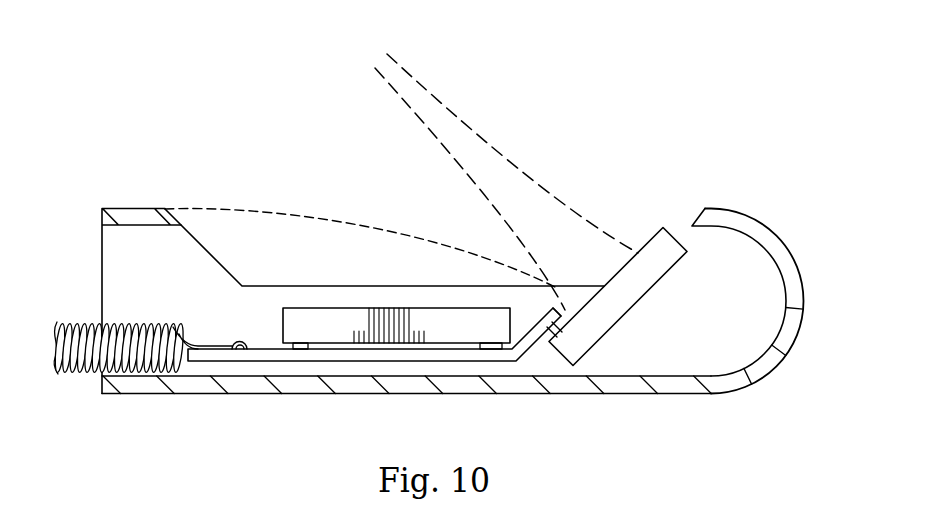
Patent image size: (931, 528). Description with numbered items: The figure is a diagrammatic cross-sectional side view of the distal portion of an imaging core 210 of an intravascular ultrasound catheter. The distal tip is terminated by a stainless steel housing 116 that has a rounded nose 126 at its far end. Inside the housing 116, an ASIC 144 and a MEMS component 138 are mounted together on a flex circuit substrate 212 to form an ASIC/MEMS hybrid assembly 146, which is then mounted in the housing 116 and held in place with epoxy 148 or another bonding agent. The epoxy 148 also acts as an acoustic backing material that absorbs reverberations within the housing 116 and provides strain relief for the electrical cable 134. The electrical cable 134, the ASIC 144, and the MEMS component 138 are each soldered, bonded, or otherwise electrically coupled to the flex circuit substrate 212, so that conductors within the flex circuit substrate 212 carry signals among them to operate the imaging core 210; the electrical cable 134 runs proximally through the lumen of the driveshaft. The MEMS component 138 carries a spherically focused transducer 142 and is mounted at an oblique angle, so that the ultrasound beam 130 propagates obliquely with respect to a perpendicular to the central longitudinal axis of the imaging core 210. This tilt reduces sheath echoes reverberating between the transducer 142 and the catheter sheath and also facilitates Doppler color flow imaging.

The imaging core 210 is at (286, 107).
The housing 116 is at (632, 395).
The rounded nose 126 is at (780, 240).
The epoxy 148 is at (778, 360).
The MEMS component 138 is at (650, 236).
The transducer 142 is at (577, 316).
The ultrasound beam 130 is at (460, 121).
The ASIC 144 is at (441, 308).
The flex circuit substrate 212 is at (311, 362).
The ASIC/MEMS hybrid assembly 146 is at (366, 373).
The electrical cable 134 is at (176, 330).